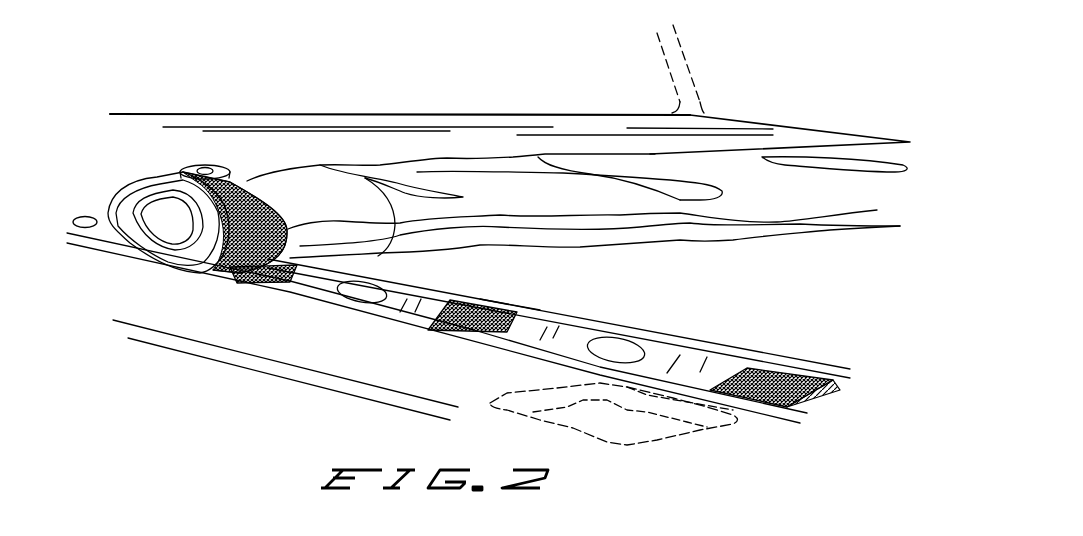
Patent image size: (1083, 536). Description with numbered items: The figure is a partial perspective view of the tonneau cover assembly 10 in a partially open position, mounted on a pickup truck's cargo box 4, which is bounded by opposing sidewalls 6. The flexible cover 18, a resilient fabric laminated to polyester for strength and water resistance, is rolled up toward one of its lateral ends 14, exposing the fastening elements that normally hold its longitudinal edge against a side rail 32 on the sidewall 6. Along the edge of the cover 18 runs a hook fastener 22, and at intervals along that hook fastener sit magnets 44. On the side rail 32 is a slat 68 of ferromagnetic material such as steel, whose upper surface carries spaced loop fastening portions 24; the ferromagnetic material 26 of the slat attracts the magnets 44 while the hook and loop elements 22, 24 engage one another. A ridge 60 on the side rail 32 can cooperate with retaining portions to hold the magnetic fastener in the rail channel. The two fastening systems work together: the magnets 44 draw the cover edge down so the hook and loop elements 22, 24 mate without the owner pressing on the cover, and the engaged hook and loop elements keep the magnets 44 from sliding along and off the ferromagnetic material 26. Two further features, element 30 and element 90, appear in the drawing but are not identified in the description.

The cargo box 4 is at (733, 115).
The sidewalls 6 is at (114, 300).
The tonneau cover assembly 10 is at (791, 152).
The lateral sides or ends 14 is at (408, 114).
The flexible cover 18 is at (617, 136).
The hook fastener 22 is at (297, 232).
The loop fastening portions 24 is at (250, 273).
The ferromagnetic material 26 is at (357, 296).
The plate 30 is at (284, 299).
The side rail 32 is at (612, 319).
The magnets 44 is at (216, 166).
The ridge 60 is at (510, 300).
The slat 68 is at (822, 397).
The fastener 90 is at (88, 216).